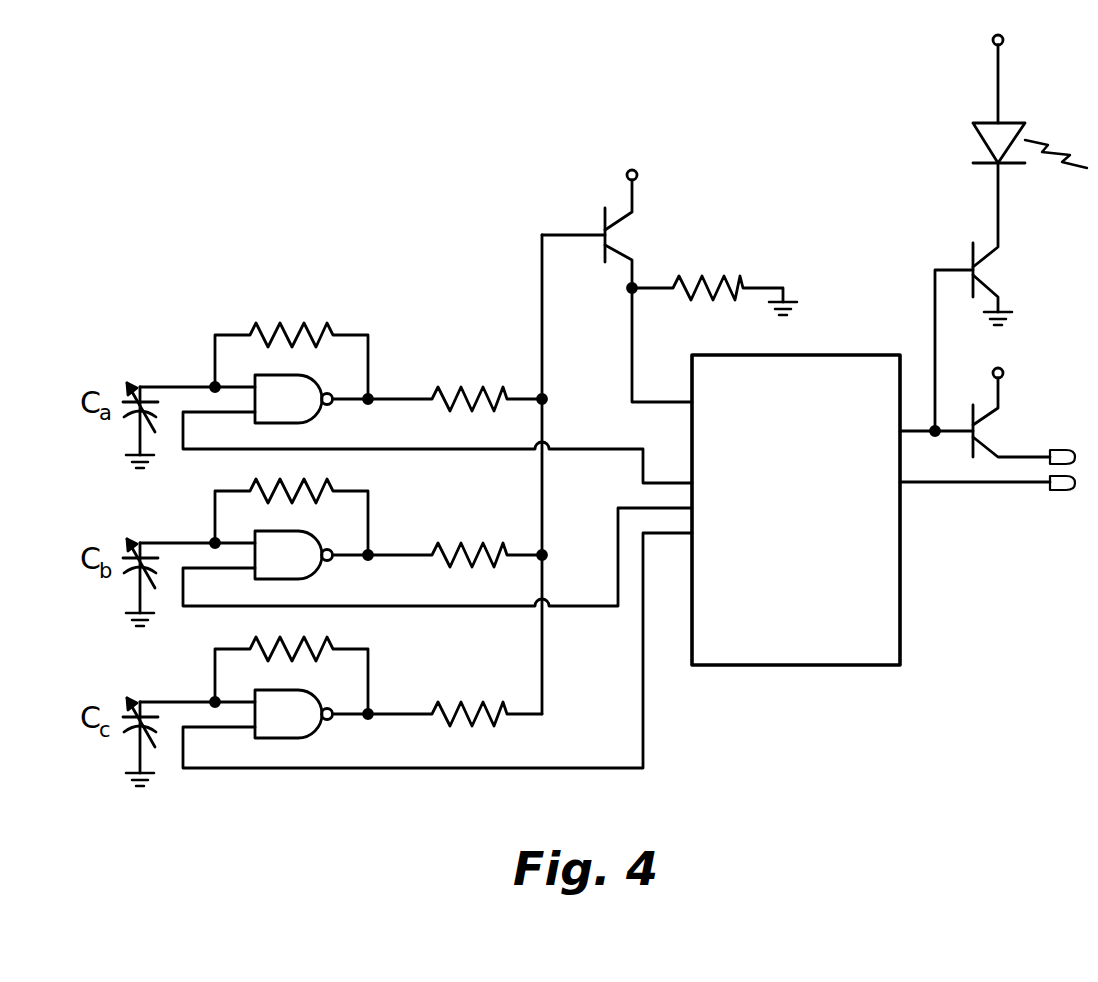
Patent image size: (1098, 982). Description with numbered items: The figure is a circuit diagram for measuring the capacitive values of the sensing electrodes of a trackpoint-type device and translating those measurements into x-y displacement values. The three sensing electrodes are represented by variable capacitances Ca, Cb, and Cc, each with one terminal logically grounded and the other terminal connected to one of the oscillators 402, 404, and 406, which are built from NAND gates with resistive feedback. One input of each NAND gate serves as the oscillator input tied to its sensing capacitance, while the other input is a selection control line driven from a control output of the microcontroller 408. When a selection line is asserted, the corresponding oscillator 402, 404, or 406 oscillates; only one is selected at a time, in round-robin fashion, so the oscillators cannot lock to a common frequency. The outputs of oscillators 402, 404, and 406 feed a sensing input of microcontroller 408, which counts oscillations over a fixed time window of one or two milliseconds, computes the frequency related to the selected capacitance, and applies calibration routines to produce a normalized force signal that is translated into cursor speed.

The oscillator 402 is at (310, 421).
The oscillator 404 is at (310, 577).
The oscillator 406 is at (310, 736).
The microcontroller 408 is at (858, 355).